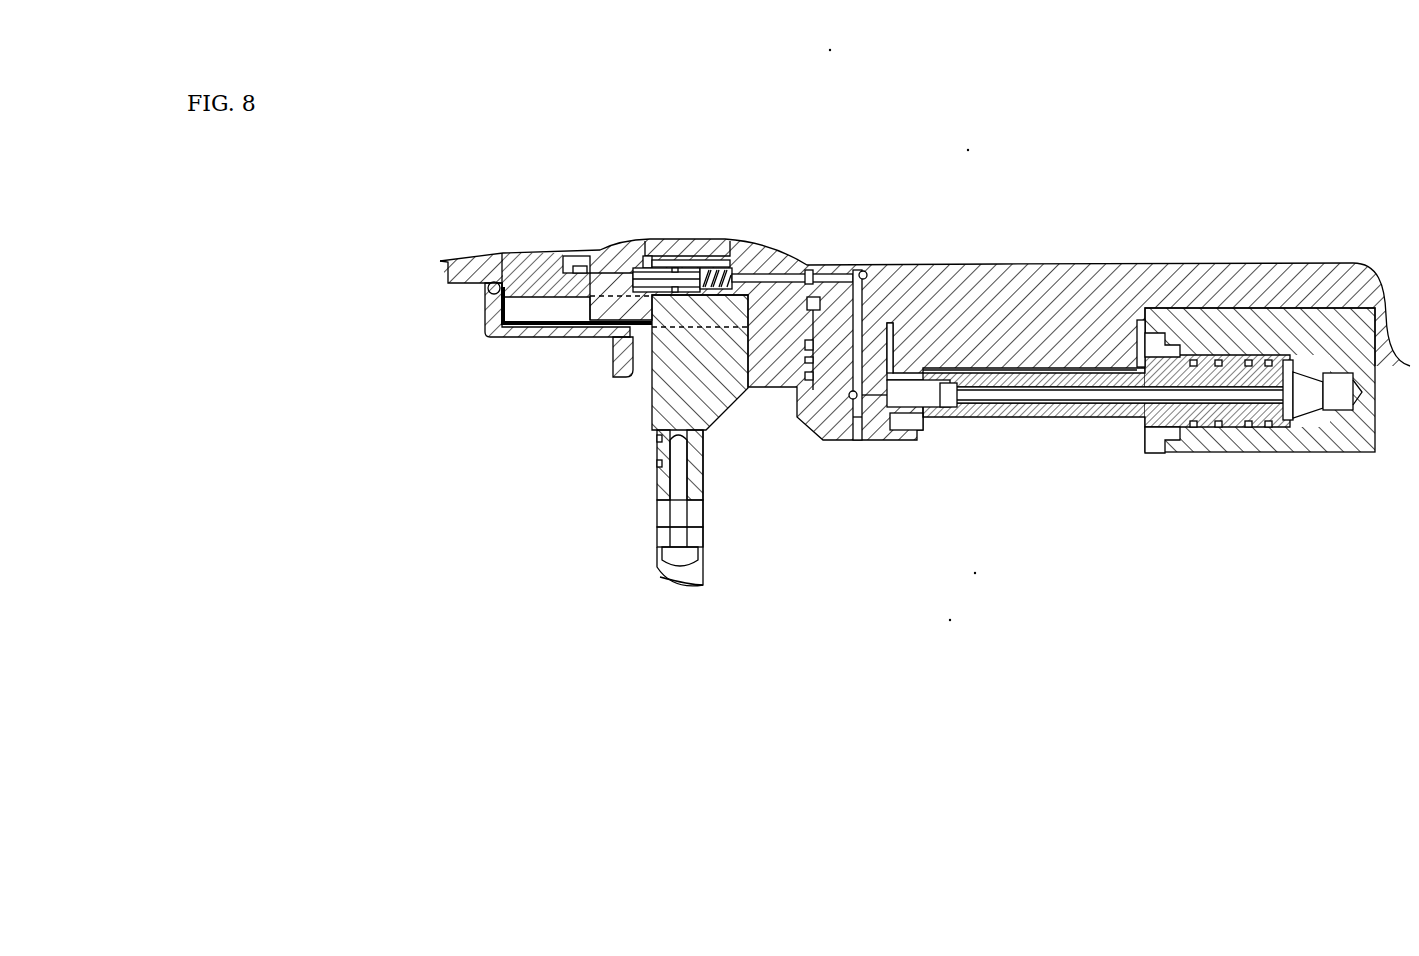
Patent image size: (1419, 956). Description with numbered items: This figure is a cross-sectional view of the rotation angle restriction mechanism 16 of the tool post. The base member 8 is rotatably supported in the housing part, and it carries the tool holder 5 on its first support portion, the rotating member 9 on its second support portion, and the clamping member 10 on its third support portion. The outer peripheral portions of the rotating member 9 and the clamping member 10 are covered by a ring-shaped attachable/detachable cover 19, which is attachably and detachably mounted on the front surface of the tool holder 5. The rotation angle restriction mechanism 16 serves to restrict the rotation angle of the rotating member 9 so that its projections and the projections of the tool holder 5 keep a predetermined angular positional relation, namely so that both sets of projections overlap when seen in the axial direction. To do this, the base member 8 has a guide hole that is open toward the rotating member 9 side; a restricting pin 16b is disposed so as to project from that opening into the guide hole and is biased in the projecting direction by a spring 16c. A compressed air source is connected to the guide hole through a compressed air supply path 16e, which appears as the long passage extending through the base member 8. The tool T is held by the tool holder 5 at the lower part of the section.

The rotation angle restriction mechanism 16 is at (788, 477).
The restricting pin 16b is at (685, 265).
The spring 16c is at (730, 267).
The compressed air supply path 16e is at (1057, 397).
The base member 8 is at (855, 453).
The tool holder 5 is at (647, 430).
The rotating member 9 is at (612, 337).
The clamping member 10 is at (548, 337).
The attachable/detachable cover 19 is at (483, 342).
The tool T is at (660, 577).